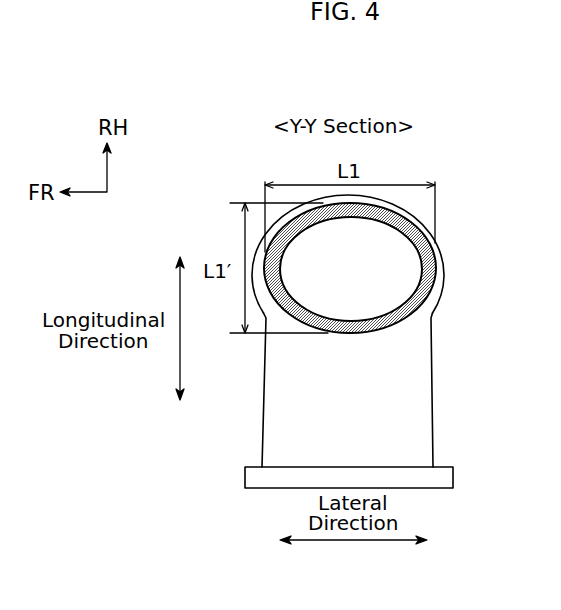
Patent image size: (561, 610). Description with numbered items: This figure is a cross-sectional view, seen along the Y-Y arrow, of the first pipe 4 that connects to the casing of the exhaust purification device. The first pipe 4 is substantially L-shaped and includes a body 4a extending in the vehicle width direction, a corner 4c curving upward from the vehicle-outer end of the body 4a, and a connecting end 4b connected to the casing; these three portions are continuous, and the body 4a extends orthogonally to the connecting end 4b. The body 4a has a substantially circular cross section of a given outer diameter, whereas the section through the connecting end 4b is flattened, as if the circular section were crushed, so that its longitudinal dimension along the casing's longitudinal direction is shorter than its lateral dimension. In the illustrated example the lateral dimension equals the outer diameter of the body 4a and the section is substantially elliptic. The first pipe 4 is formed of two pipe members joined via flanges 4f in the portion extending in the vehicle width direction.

The first pipe 4 is at (453, 212).
The body 4a is at (422, 388).
The connecting end 4b is at (435, 283).
The corner 4c is at (443, 260).
The flange 4f is at (452, 478).